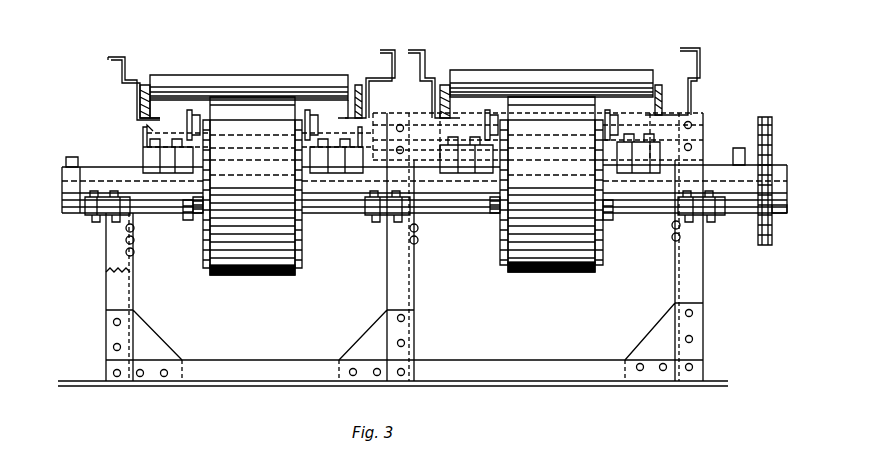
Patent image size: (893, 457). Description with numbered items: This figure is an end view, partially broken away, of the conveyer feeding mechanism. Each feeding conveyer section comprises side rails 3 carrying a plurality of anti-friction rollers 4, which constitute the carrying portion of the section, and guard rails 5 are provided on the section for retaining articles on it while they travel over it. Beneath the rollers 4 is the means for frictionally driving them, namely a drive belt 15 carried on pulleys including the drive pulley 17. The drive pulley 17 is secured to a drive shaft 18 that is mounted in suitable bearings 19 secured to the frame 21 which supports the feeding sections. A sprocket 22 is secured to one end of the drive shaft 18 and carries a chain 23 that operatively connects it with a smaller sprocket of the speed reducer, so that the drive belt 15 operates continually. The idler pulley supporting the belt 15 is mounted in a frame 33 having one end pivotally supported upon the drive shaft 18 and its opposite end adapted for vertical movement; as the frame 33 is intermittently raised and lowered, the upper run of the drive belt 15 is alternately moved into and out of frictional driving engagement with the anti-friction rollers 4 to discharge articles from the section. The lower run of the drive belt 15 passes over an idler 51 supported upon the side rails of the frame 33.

The side rails 3 is at (157, 118).
The anti-friction rollers 4 is at (553, 85).
The guard rails 5 is at (118, 57).
The drive belt 15 is at (260, 245).
The drive pulley 17 is at (204, 268).
The drive shaft 18 is at (193, 210).
The bearings 19 is at (110, 175).
The frame 21 is at (122, 237).
The sprocket 22 is at (776, 213).
The chain 23 is at (768, 117).
The frame 33 is at (173, 163).
The idler 51 is at (188, 220).